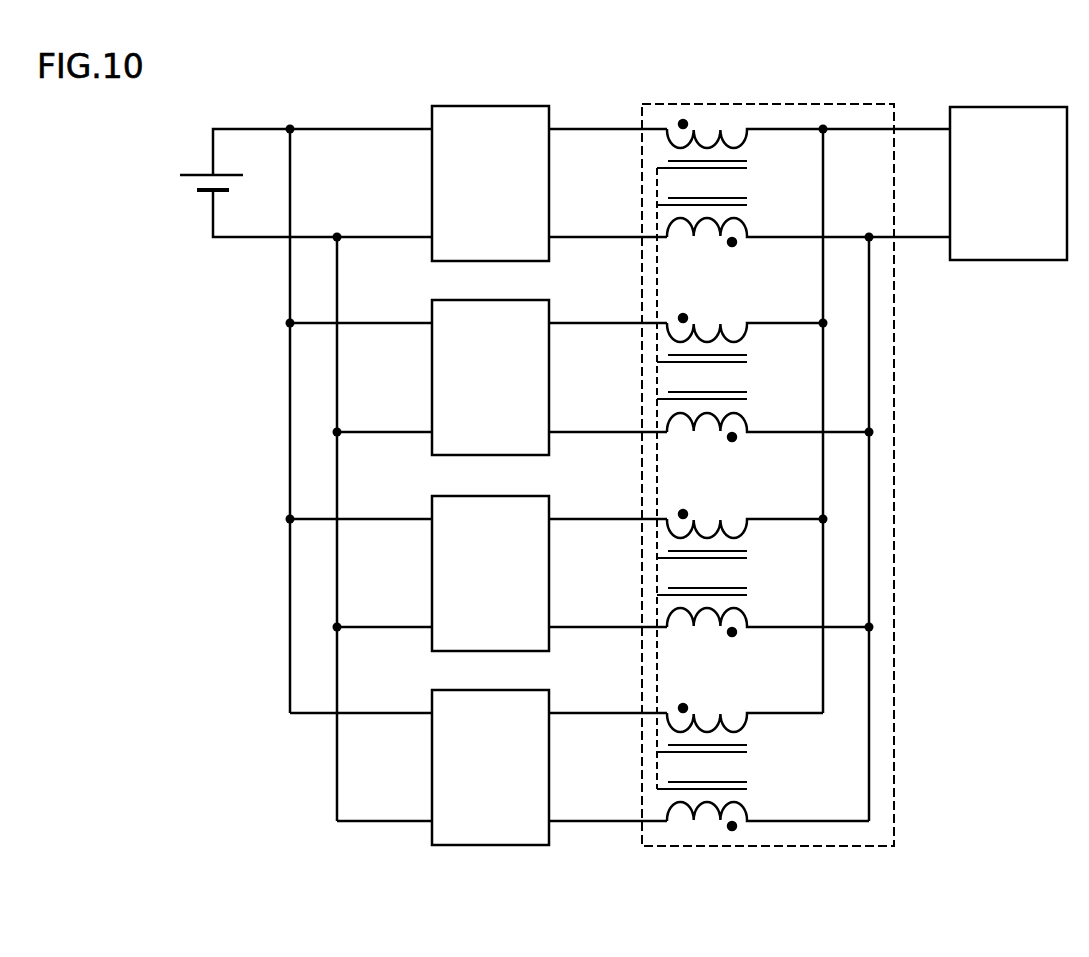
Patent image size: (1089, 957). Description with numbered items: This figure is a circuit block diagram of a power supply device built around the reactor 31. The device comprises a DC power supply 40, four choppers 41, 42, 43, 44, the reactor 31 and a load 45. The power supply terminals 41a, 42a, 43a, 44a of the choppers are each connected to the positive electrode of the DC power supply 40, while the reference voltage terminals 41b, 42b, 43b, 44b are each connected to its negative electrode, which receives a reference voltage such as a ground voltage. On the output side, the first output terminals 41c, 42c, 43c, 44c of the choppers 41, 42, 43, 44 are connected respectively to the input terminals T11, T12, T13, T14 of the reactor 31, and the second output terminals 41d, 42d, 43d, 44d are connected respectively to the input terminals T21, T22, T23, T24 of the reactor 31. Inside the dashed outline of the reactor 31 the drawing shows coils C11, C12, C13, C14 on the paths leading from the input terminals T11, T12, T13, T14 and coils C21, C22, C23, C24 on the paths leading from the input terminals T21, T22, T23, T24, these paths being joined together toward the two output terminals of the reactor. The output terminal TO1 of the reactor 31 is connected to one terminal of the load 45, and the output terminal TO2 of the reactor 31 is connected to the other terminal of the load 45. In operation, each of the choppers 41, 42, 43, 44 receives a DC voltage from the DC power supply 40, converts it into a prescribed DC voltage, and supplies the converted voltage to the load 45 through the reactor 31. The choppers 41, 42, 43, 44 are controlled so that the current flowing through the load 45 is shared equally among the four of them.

The DC power supply 40 is at (200, 175).
The chopper 41 is at (451, 106).
The power supply terminal 41a is at (432, 131).
The reference voltage terminal 41b is at (432, 236).
The first output terminal 41c is at (549, 131).
The second output terminal 41d is at (549, 236).
The chopper 42 is at (451, 300).
The power supply terminal 42a is at (432, 325).
The reference voltage terminal 42b is at (432, 431).
The first output terminal 42c is at (549, 325).
The second output terminal 42d is at (549, 431).
The chopper 43 is at (451, 496).
The power supply terminal 43a is at (432, 521).
The reference voltage terminal 43b is at (432, 626).
The first output terminal 43c is at (549, 521).
The second output terminal 43d is at (549, 626).
The chopper 44 is at (451, 690).
The power supply terminal 44a is at (432, 715).
The reference voltage terminal 44b is at (432, 820).
The first output terminal 44c is at (549, 715).
The second output terminal 44d is at (549, 820).
The reactor 31 is at (703, 101).
The input terminal T11 is at (641, 129).
The input terminal T12 is at (641, 323).
The input terminal T13 is at (641, 519).
The input terminal T14 is at (641, 713).
The input terminal T21 is at (641, 238).
The input terminal T22 is at (641, 433).
The input terminal T23 is at (641, 628).
The input terminal T24 is at (641, 822).
The coil C11 is at (748, 140).
The coil C12 is at (748, 334).
The coil C13 is at (748, 530).
The coil C14 is at (748, 724).
The coil C21 is at (748, 224).
The coil C22 is at (748, 419).
The coil C23 is at (748, 614).
The coil C24 is at (748, 808).
The output terminal TO1 is at (895, 129).
The output terminal TO2 is at (895, 237).
The load 45 is at (1010, 107).